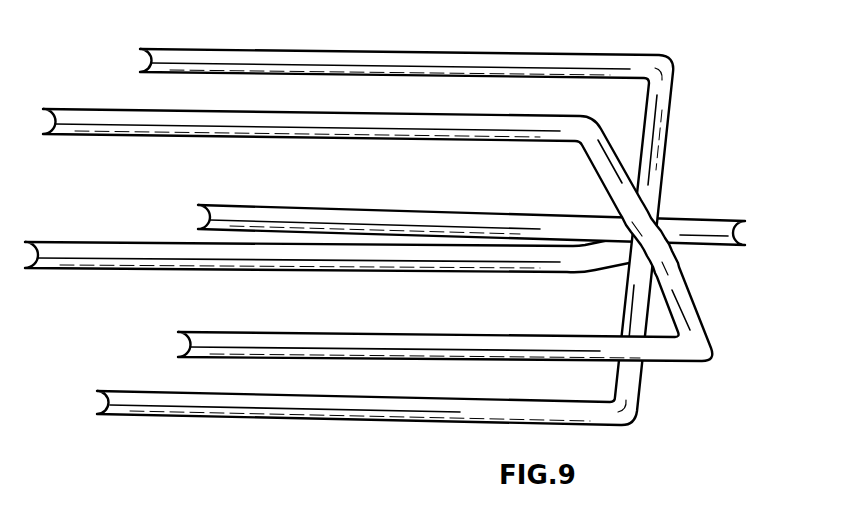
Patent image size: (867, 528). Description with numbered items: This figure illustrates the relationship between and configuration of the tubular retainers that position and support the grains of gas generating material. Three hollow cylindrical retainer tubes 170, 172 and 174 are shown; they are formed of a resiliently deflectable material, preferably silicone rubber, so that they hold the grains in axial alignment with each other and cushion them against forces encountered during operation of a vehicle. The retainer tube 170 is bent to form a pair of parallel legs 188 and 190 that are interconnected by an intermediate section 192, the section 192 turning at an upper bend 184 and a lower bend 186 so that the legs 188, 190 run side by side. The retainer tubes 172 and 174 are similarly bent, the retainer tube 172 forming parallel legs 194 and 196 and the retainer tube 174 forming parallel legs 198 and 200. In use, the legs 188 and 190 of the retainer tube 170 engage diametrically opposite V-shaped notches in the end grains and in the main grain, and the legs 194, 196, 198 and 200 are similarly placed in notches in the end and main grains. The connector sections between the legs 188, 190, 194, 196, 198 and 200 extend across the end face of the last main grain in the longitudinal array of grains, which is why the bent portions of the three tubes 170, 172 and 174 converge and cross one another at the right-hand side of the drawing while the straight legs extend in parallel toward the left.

The retainer tube 170 is at (413, 231).
The leg 188 is at (477, 52).
The upper bend 184 is at (676, 78).
The intermediate section 192 is at (656, 158).
The lower bend 186 is at (626, 400).
The leg 190 is at (327, 411).
The retainer tube 172 is at (377, 250).
The leg 194 is at (422, 138).
The leg 196 is at (431, 350).
The retainer tube 174 is at (346, 271).
The leg 198 is at (152, 262).
The leg 200 is at (321, 204).